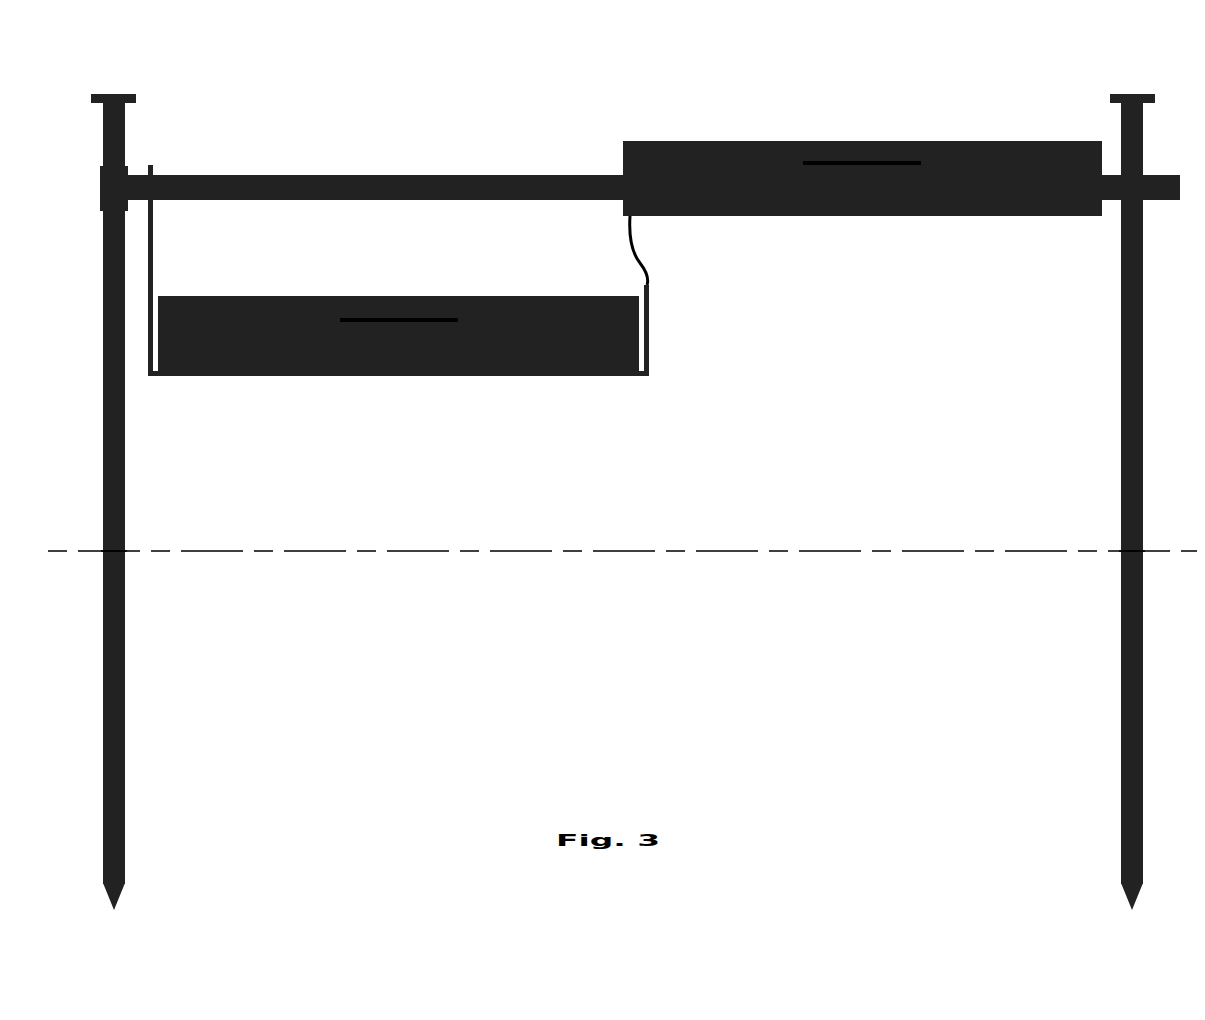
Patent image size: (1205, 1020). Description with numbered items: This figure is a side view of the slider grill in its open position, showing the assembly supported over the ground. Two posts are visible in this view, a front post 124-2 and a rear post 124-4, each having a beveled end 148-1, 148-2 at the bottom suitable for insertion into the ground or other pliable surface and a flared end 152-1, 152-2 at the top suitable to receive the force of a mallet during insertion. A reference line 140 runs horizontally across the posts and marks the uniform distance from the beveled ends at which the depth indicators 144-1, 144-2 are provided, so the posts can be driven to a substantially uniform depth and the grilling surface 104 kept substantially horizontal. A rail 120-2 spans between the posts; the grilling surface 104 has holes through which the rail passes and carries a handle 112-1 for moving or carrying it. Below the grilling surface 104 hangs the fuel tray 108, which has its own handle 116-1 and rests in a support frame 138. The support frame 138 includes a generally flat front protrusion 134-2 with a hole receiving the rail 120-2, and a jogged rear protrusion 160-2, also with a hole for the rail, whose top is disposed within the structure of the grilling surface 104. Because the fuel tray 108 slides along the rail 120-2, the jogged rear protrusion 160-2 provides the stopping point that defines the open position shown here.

The grilling surface 104 is at (1012, 204).
The fuel tray 108 is at (217, 356).
The handle 112-1 is at (876, 132).
The handle 116-1 is at (400, 290).
The rail 120-2 is at (420, 172).
The front post 124-2 is at (117, 425).
The rear post 124-4 is at (1113, 330).
The front protrusion 134-2 is at (162, 229).
The support frame 138 is at (427, 365).
The reference line 140 is at (404, 540).
The depth indicator 144-1 is at (112, 537).
The depth indicator 144-2 is at (1128, 538).
The beveled end 148-1 is at (115, 880).
The beveled end 148-2 is at (1118, 880).
The flared end 152-1 is at (114, 84).
The flared end 152-2 is at (1105, 85).
The rear protrusion 160-2 is at (640, 272).